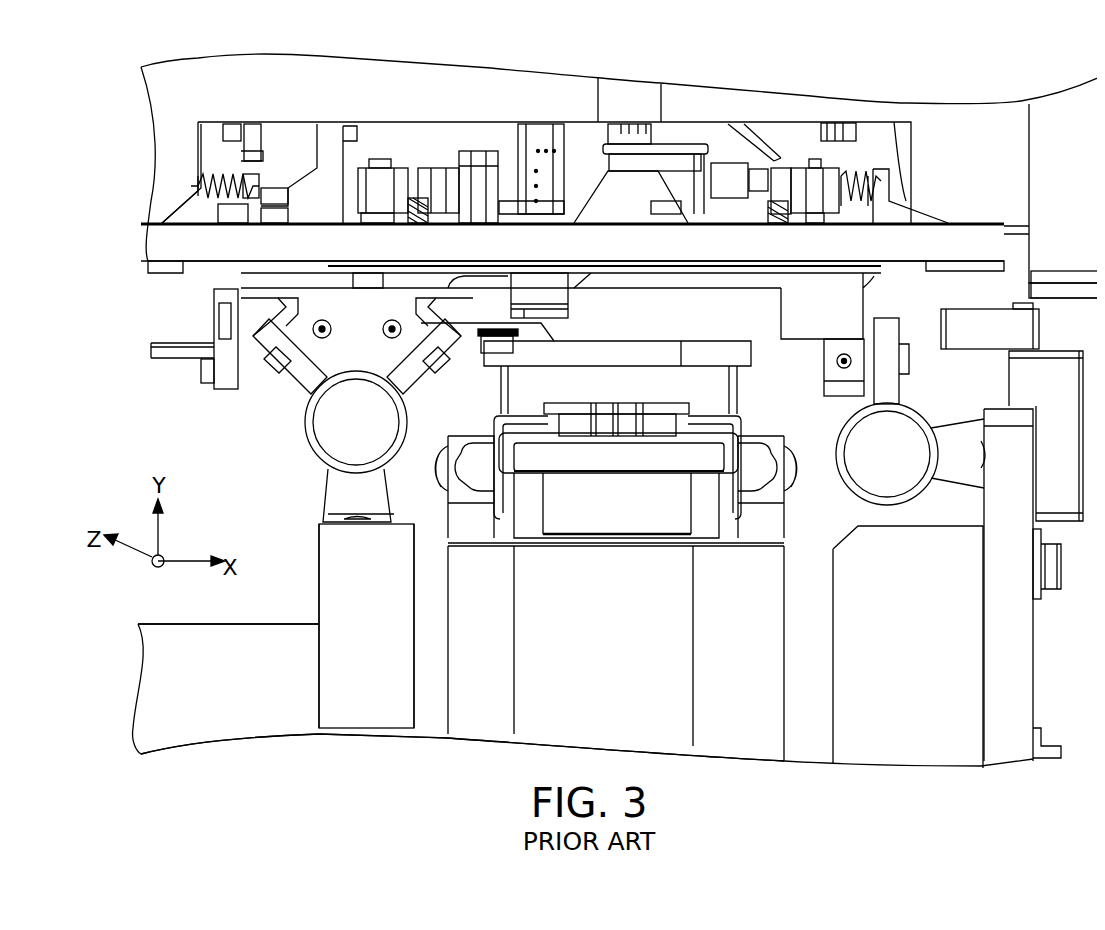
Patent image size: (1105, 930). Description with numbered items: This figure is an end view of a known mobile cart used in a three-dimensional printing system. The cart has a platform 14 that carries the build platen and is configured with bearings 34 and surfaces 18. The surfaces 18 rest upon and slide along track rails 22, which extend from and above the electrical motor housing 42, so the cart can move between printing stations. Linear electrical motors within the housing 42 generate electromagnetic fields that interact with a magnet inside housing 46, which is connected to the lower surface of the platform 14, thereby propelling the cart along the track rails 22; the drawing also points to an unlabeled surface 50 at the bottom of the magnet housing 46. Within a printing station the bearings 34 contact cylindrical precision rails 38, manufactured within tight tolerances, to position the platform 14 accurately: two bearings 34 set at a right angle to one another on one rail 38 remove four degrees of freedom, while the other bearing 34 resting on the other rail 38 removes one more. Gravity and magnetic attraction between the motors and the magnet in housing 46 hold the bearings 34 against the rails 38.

The platform 14 is at (860, 290).
The surfaces 18 is at (527, 413).
The track rails 22 is at (443, 503).
The bearings 34 is at (288, 347).
The precision rails 38 is at (310, 448).
The electrical motor housing 42 is at (555, 700).
The magnet housing 46 is at (603, 502).
The mounting surface 50 is at (610, 542).